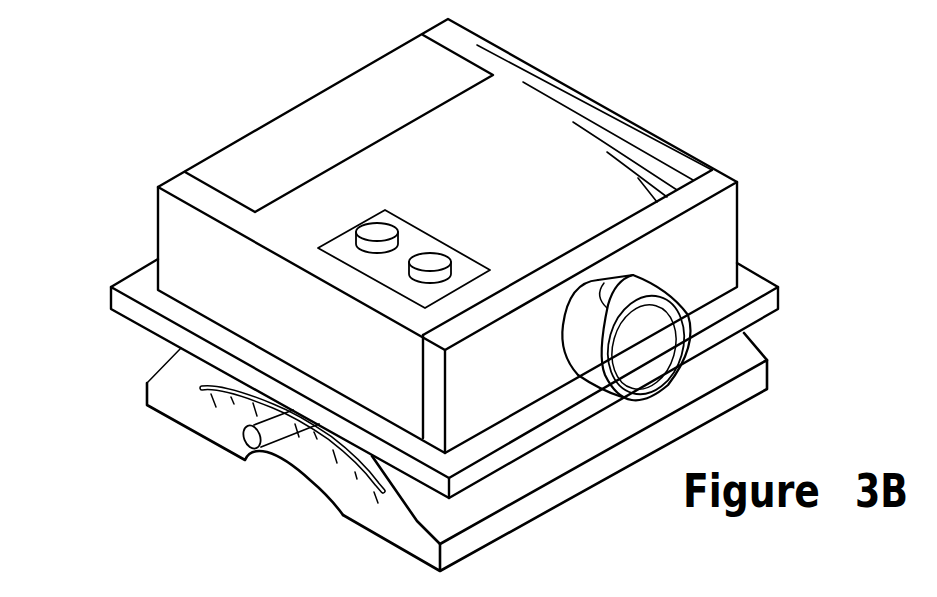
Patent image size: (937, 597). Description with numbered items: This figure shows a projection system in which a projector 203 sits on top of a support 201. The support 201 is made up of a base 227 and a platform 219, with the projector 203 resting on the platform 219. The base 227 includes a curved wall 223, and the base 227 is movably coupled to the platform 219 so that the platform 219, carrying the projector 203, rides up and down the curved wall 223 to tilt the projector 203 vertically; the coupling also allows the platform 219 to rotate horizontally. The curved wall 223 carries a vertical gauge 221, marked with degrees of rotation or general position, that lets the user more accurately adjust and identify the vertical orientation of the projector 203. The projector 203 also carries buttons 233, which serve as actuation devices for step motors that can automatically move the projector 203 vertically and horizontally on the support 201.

The support 201 is at (780, 256).
The projector 203 is at (290, 122).
The platform 219 is at (112, 293).
The vertical gauge 221 is at (206, 409).
The curved wall 223 is at (410, 542).
The base 227 is at (560, 505).
The buttons 233 is at (432, 258).